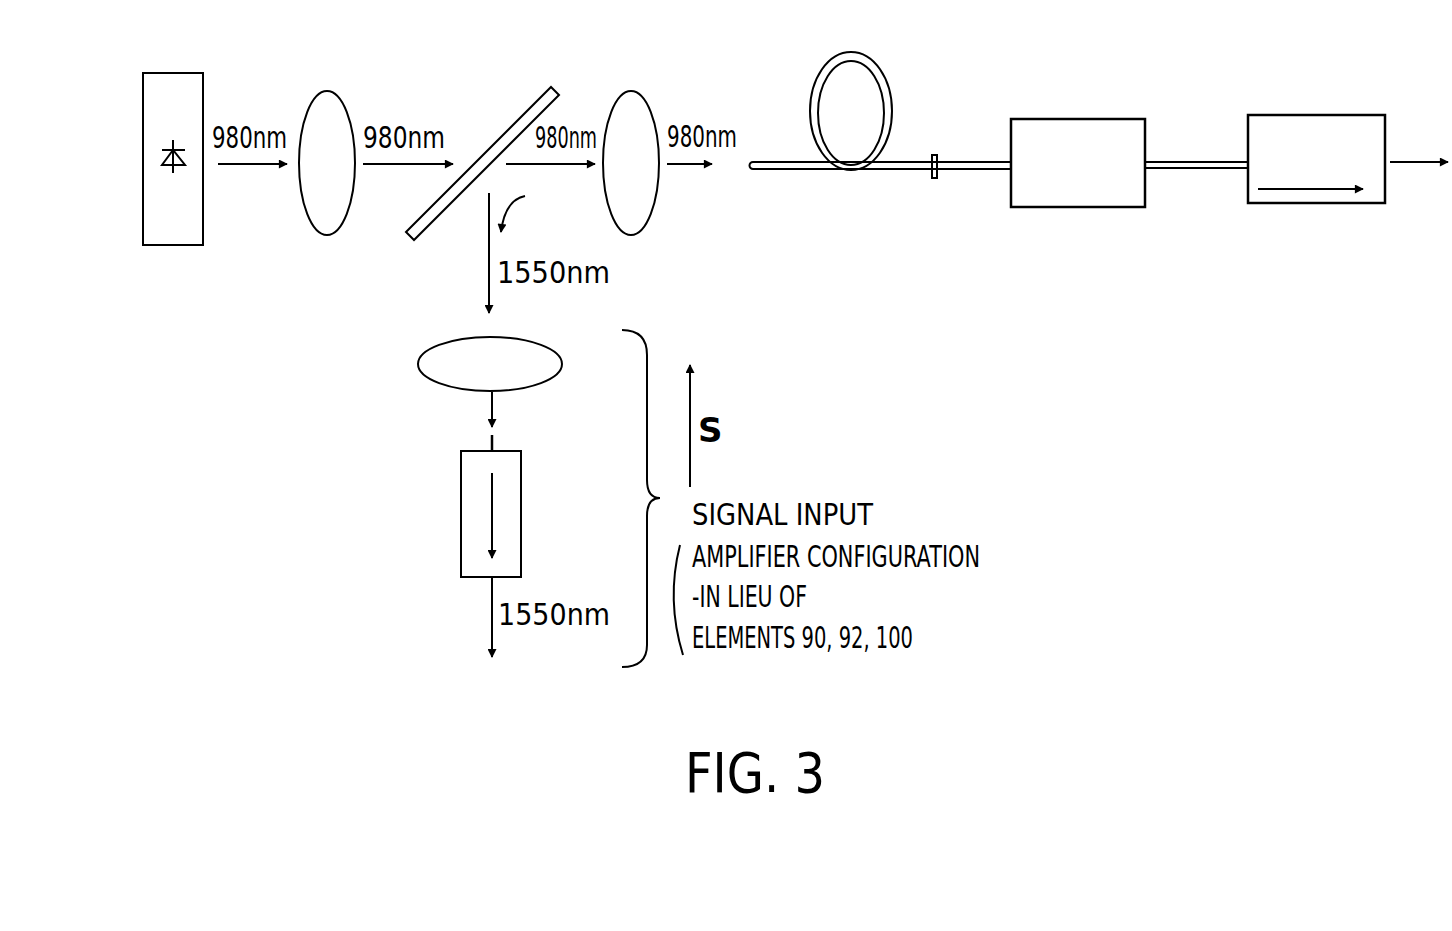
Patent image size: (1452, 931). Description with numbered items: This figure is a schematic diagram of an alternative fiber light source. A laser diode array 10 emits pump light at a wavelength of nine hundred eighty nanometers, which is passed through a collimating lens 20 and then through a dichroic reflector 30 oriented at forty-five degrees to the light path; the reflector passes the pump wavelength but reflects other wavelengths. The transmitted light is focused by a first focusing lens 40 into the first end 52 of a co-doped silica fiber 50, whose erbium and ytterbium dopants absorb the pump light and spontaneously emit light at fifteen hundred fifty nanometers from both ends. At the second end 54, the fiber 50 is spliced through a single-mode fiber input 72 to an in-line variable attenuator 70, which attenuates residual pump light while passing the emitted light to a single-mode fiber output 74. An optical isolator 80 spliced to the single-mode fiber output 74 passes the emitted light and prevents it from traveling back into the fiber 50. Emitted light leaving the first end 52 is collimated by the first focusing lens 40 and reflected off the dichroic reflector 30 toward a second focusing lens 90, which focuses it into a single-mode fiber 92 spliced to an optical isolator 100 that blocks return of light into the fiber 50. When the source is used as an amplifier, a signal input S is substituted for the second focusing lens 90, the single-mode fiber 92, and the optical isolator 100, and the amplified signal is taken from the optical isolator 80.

The laser diode array 10 is at (158, 233).
The collimating lens 20 is at (330, 226).
The dichroic reflector 30 is at (535, 112).
The first focusing lens 40 is at (634, 92).
The co-doped silica fiber 50 is at (793, 170).
The first end 52 is at (745, 168).
The second end 54 is at (937, 160).
The in-line variable attenuator 70 is at (1093, 207).
The single-mode fiber input 72 is at (975, 170).
The single-mode fiber output 74 is at (1190, 170).
The optical isolator 80 is at (1320, 203).
The second focusing lens 90 is at (425, 366).
The single-mode fiber 92 is at (494, 446).
The optical isolator 100 is at (461, 493).